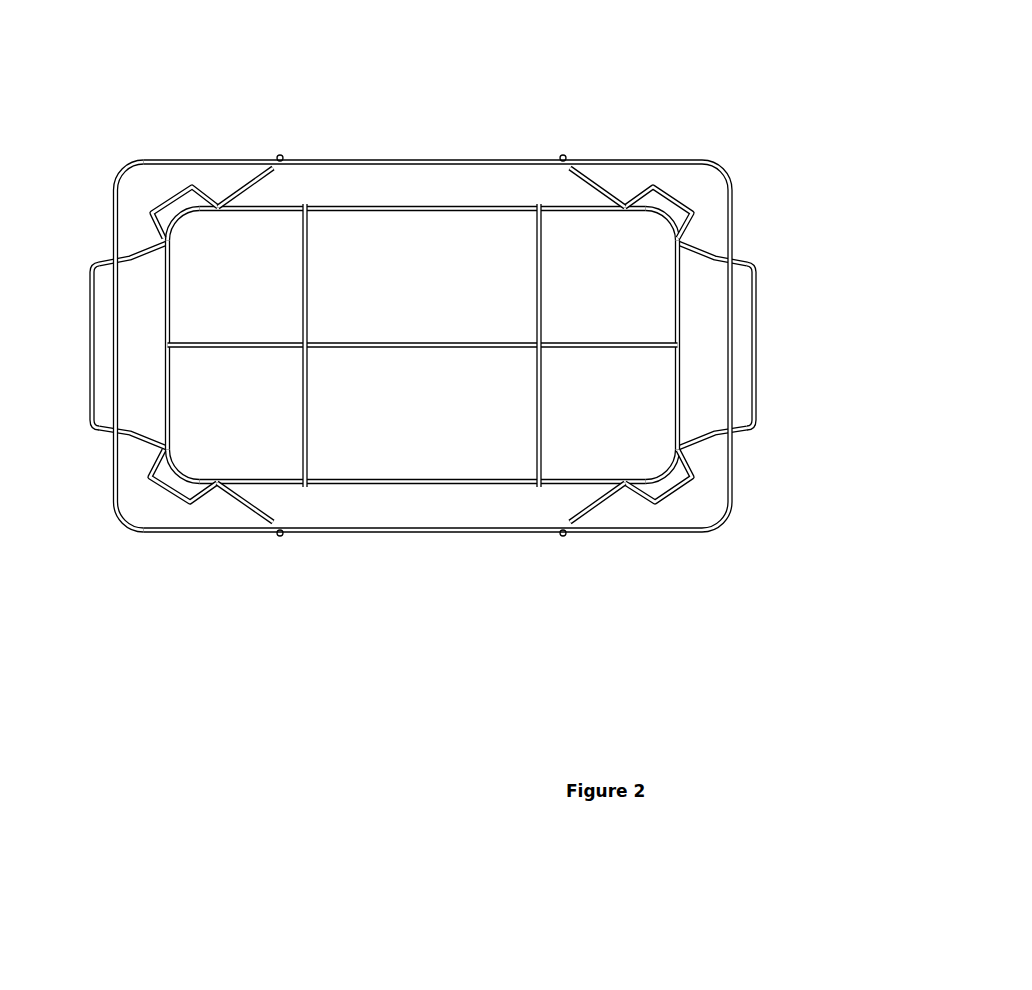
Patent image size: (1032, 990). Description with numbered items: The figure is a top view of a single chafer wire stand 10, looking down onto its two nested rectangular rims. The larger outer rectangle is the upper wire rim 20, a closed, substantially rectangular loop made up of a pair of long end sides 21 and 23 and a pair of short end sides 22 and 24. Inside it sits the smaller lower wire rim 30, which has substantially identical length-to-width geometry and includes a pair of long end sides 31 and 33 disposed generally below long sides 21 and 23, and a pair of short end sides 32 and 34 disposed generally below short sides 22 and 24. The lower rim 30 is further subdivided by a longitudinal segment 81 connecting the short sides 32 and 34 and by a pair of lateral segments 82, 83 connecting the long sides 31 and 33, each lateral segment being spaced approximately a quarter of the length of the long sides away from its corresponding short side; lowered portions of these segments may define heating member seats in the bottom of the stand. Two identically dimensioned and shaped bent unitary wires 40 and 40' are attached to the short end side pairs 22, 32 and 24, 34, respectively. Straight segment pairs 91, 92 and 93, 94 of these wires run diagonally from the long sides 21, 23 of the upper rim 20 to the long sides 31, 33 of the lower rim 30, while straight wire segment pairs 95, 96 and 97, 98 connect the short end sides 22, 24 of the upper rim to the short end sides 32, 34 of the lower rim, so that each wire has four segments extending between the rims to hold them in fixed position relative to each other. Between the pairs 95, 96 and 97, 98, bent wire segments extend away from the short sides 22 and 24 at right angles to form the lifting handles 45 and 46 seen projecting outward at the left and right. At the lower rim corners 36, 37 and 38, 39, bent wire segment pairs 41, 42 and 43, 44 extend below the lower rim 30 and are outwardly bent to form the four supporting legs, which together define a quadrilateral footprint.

The chafer wire stand 10 is at (704, 108).
The upper wire rim 20 is at (437, 349).
The long end side 21 is at (438, 160).
The short end side 22 is at (115, 473).
The long end side 23 is at (423, 532).
The short end side 24 is at (730, 480).
The lower wire rim 30 is at (423, 332).
The long end side 31 is at (378, 209).
The short end side 32 is at (172, 370).
The long end side 33 is at (425, 479).
The short end side 34 is at (675, 380).
The lower rim corner 36 is at (187, 215).
The lower rim corner 37 is at (180, 472).
The lower rim corner 38 is at (663, 472).
The lower rim corner 39 is at (658, 218).
The bent unitary wire 40 is at (224, 173).
The bent unitary wire 40' is at (667, 171).
The supporting leg 41 is at (167, 198).
The supporting leg 42 is at (172, 497).
The supporting leg 43 is at (672, 492).
The supporting leg 44 is at (682, 202).
The lifting handle 45 is at (101, 345).
The lifting handle 46 is at (752, 345).
The longitudinal segment 81 is at (423, 343).
The lateral segment 82 is at (307, 438).
The lateral segment 83 is at (537, 427).
The straight segment 91 is at (263, 180).
The straight segment 92 is at (253, 505).
The straight segment 93 is at (582, 508).
The straight segment 94 is at (585, 183).
The straight wire segment 95 is at (150, 263).
The straight wire segment 96 is at (152, 433).
The straight wire segment 97 is at (695, 437).
The straight wire segment 98 is at (693, 255).